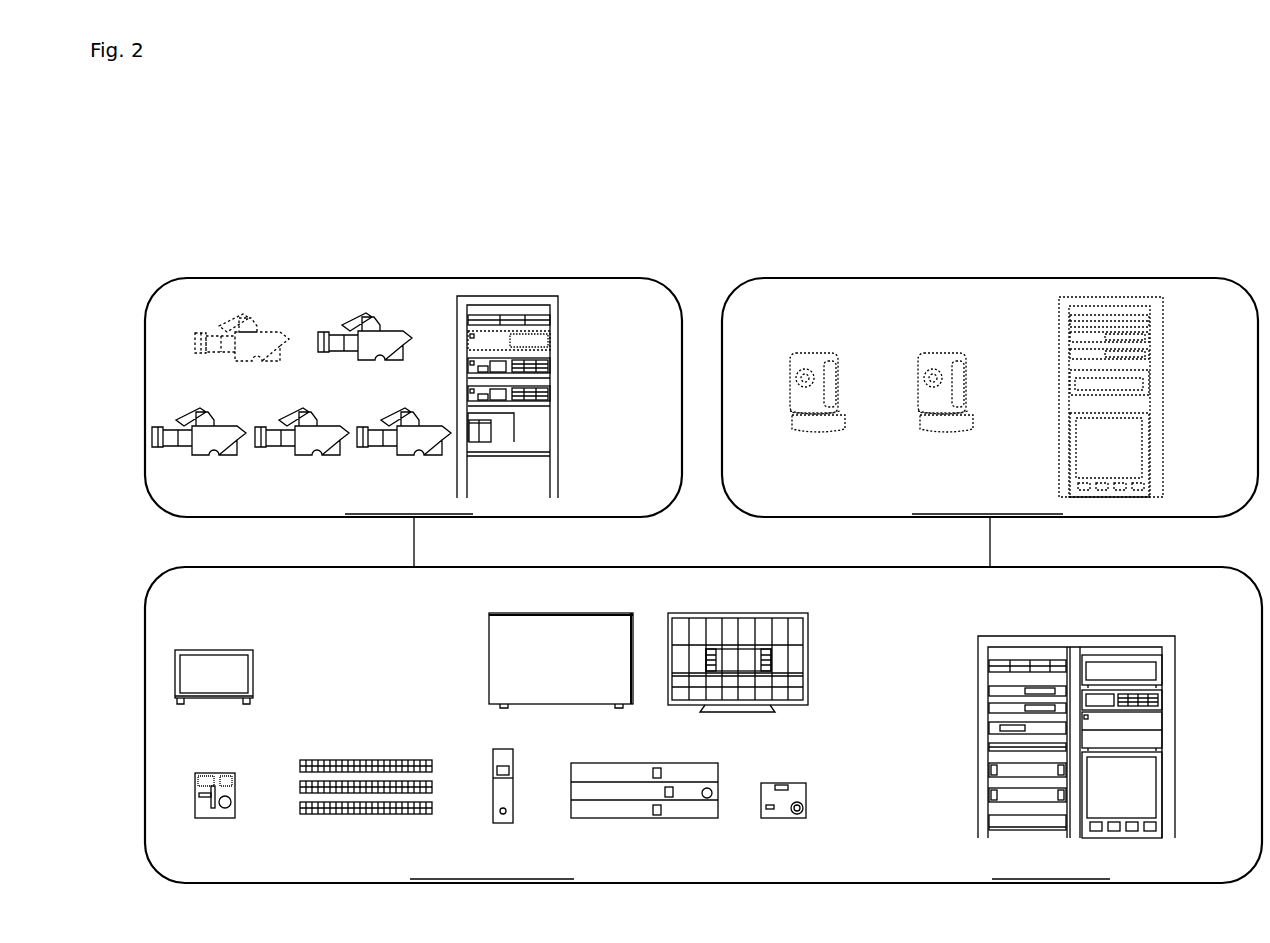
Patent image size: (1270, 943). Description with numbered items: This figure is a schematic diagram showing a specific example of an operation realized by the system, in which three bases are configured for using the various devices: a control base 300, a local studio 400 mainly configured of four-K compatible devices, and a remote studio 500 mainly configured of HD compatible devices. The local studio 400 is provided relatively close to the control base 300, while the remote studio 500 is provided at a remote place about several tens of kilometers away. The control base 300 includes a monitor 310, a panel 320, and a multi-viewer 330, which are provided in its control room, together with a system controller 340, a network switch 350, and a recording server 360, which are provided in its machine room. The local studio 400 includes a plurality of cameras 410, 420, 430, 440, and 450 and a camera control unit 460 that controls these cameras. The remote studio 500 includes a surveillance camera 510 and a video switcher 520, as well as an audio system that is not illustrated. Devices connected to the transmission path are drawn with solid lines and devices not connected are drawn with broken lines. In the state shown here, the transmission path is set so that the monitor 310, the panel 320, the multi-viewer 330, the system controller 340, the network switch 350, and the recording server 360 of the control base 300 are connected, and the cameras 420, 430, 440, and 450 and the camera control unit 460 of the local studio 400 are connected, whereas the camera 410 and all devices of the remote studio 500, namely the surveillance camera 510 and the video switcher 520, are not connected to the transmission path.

The control base 300 is at (765, 883).
The monitor 310 is at (578, 621).
The panel 320 is at (355, 825).
The multi-viewer 330 is at (743, 621).
The system controller 340 is at (973, 760).
The network switch 350 is at (995, 722).
The recording server 360 is at (1150, 718).
The local studio 400 is at (622, 278).
The camera 410 is at (270, 328).
The camera 420 is at (393, 328).
The camera 430 is at (225, 423).
The camera 440 is at (328, 423).
The camera 450 is at (432, 423).
The camera control unit 460 is at (502, 431).
The remote studio 500 is at (1198, 278).
The surveillance camera 510 is at (814, 352).
The video switcher 520 is at (1133, 444).